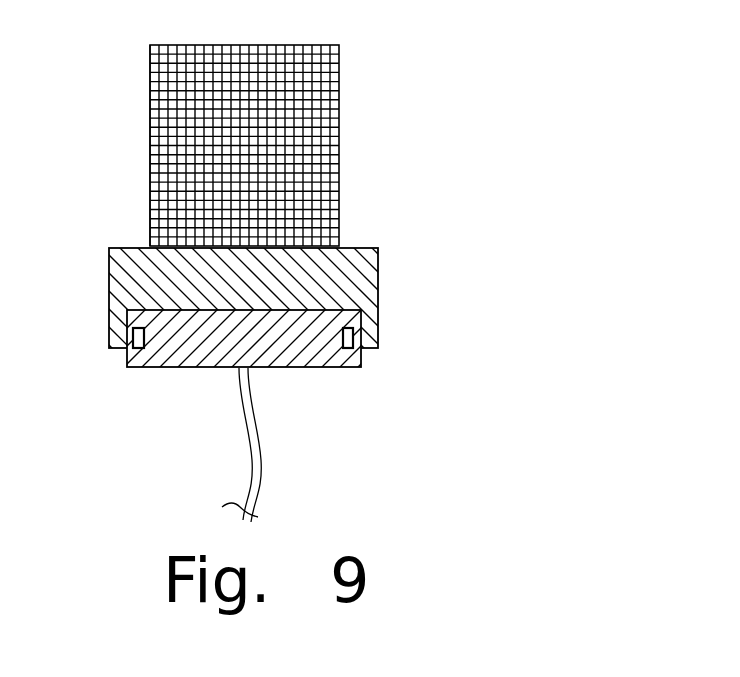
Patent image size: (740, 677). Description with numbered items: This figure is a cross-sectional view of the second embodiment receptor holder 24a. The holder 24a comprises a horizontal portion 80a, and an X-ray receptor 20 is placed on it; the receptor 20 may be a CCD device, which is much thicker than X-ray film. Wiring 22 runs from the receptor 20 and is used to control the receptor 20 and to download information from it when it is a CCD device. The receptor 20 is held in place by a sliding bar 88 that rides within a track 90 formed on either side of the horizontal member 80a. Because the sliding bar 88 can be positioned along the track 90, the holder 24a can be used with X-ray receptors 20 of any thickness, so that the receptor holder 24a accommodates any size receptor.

The X-ray receptor 20 is at (340, 87).
The wiring 22 is at (262, 493).
The receptor holder 24a is at (261, 328).
The sliding bar 88 is at (378, 300).
The horizontal portion 80a is at (325, 368).
The track 90 is at (118, 353).